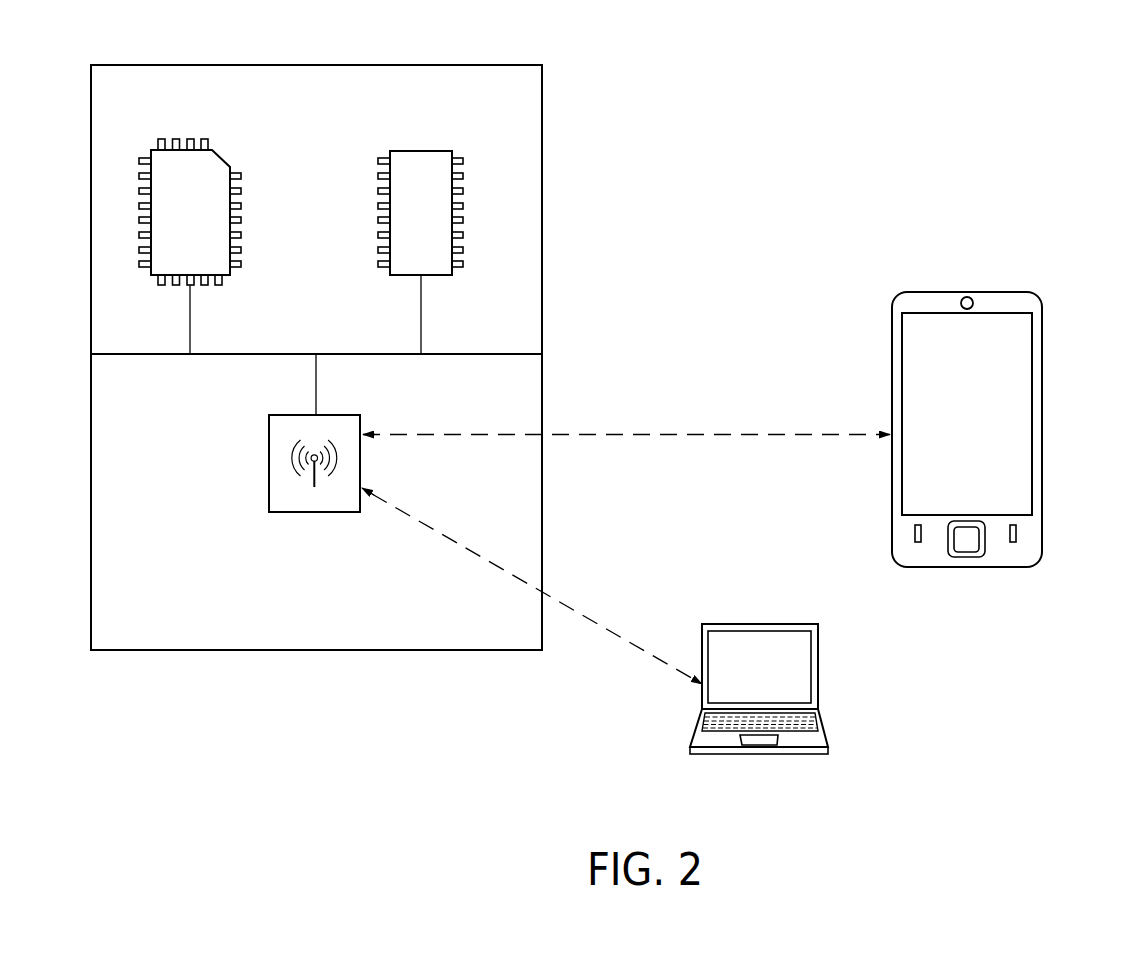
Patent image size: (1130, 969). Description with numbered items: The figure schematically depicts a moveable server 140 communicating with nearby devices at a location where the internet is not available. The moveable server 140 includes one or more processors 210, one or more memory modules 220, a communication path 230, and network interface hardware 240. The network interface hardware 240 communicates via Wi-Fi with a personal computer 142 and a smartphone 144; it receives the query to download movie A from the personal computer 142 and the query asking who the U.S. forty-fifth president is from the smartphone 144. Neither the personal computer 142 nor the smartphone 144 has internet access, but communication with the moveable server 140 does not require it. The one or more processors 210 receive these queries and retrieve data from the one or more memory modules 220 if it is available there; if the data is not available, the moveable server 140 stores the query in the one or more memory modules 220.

The moveable server 140 is at (311, 65).
The one or more processors 210 is at (222, 280).
The one or more memory modules 220 is at (401, 277).
The communication path 230 is at (142, 356).
The network interface hardware 240 is at (269, 455).
The smartphone 144 is at (1042, 515).
The personal computer 142 is at (743, 755).